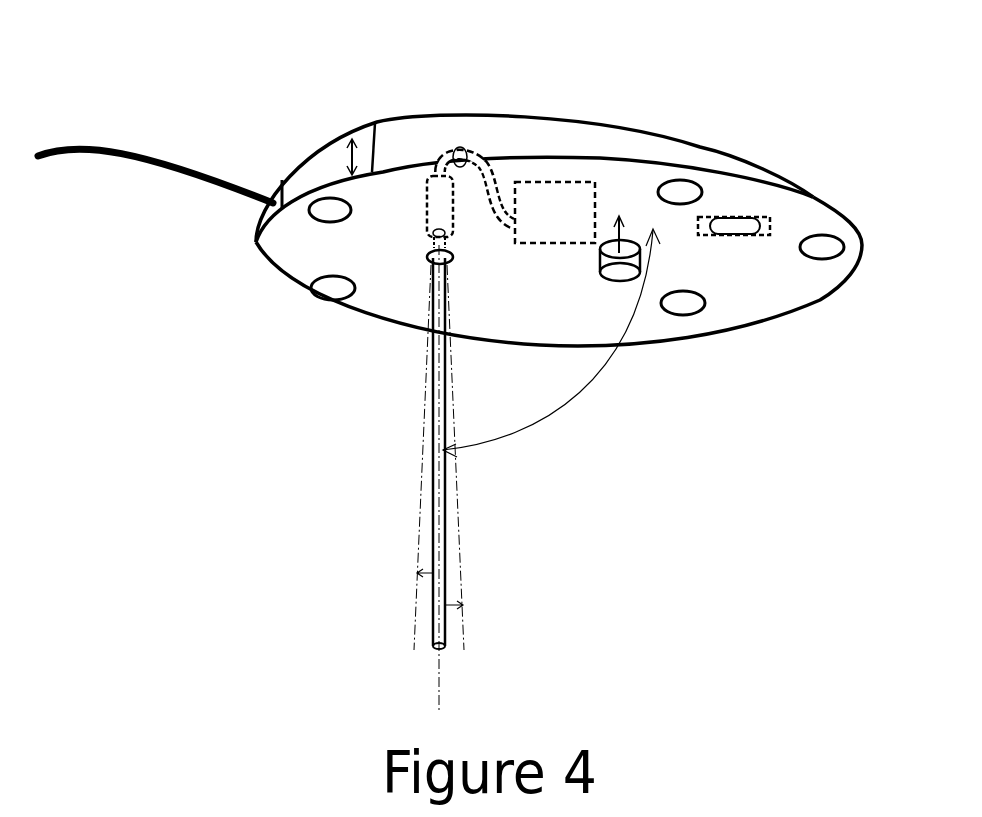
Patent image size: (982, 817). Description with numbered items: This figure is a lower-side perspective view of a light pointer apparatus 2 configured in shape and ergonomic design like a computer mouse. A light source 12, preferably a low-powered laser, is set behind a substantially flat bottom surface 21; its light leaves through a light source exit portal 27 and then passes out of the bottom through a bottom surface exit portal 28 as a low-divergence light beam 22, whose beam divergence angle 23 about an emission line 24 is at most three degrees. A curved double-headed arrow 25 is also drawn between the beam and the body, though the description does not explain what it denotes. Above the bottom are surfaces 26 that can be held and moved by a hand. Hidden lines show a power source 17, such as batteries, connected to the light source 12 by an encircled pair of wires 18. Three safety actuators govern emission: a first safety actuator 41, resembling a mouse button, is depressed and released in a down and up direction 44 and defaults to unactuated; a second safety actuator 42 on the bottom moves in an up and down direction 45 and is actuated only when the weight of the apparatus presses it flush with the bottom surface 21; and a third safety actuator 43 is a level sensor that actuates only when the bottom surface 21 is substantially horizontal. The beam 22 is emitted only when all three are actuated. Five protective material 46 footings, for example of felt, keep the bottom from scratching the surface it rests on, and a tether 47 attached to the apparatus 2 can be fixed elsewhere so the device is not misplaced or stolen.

The light pointer apparatus 2 is at (372, 90).
The light source 12 is at (440, 203).
The power source 17 is at (570, 198).
The pair of wires 18 is at (462, 148).
The substantially flat bottom surface 21 is at (386, 265).
The low-divergence light beam 22 is at (433, 550).
The beam divergence angle 23 is at (447, 607).
The emission line 24 is at (440, 692).
The pivot direction 25 is at (562, 413).
The surfaces 26 is at (432, 157).
The light source exit portal 27 is at (435, 233).
The bottom surface exit portal 28 is at (433, 253).
The first safety actuator 41 is at (312, 173).
The second safety actuator 42 is at (615, 270).
The third safety actuator 43 is at (770, 216).
The down and up direction 44 is at (340, 143).
The up and down direction 45 is at (619, 247).
The protective material footings 46 is at (328, 215).
The tether 47 is at (127, 150).